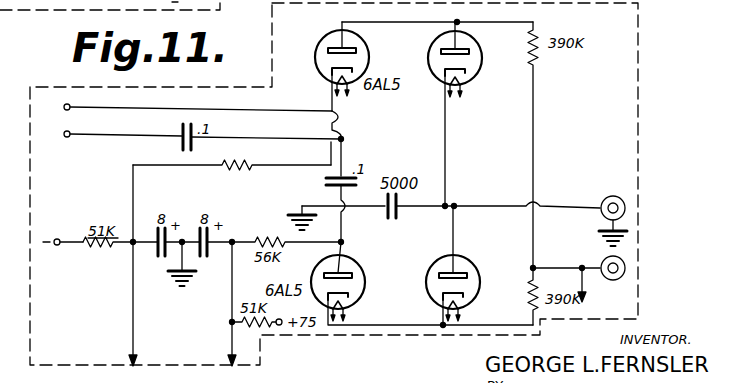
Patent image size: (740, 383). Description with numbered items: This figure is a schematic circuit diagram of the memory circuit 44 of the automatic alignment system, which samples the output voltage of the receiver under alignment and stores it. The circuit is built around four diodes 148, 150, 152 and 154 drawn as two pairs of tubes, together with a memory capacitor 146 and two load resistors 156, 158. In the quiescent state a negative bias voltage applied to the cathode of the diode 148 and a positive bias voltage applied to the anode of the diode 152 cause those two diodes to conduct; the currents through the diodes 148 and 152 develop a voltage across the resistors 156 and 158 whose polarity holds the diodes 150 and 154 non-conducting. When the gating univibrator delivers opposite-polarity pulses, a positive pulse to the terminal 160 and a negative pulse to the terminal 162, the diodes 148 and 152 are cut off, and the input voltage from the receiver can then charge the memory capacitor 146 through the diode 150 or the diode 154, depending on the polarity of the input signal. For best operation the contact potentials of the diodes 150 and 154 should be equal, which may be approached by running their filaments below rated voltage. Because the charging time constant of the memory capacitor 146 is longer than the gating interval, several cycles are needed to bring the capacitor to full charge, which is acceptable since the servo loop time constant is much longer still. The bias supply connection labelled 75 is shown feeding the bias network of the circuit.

The memory circuit 44 is at (638, 42).
The diode 148 is at (326, 36).
The diode 150 is at (480, 78).
The diode 152 is at (367, 280).
The diode 154 is at (470, 262).
The resistor 156 is at (522, 300).
The resistor 158 is at (540, 32).
The memory capacitor 146 is at (394, 220).
The terminal 160 is at (64, 137).
The terminal 162 is at (64, 110).
The bias supply terminal 75 is at (55, 246).